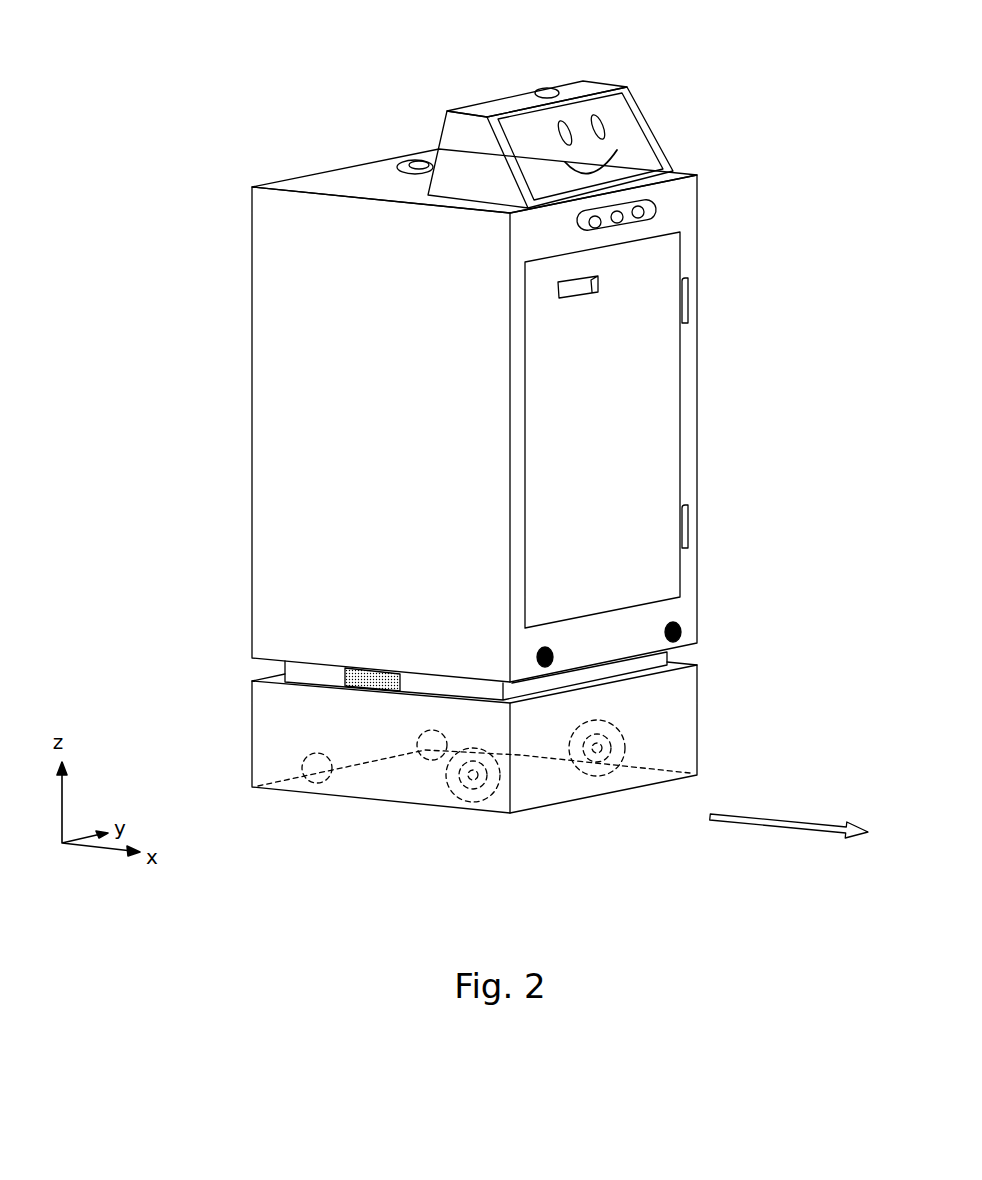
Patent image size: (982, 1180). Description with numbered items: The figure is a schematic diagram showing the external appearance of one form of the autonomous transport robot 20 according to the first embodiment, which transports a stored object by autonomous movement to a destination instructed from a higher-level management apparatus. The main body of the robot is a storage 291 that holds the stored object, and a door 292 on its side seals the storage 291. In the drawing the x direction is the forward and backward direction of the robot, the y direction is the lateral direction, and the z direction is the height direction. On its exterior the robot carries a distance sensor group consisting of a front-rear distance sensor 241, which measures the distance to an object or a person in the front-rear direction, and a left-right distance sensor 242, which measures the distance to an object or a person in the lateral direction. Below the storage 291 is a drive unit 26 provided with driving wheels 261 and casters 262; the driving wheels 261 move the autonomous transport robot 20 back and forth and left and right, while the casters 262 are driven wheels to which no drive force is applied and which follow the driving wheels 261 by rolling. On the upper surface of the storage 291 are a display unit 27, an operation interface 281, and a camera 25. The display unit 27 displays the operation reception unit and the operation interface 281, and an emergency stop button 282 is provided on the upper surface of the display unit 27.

The autonomous transport robot 20 is at (213, 213).
The camera 25 is at (422, 157).
The display unit 27 is at (623, 110).
The operation interface 281 is at (635, 162).
The emergency stop button 282 is at (540, 87).
The front-rear distance sensor 241 is at (645, 210).
The left-right distance sensor 242 is at (345, 673).
The drive unit 26 is at (697, 667).
The driving wheels 261 is at (627, 740).
The casters 262 is at (306, 762).
The storage 291 is at (697, 460).
The door 292 is at (645, 380).